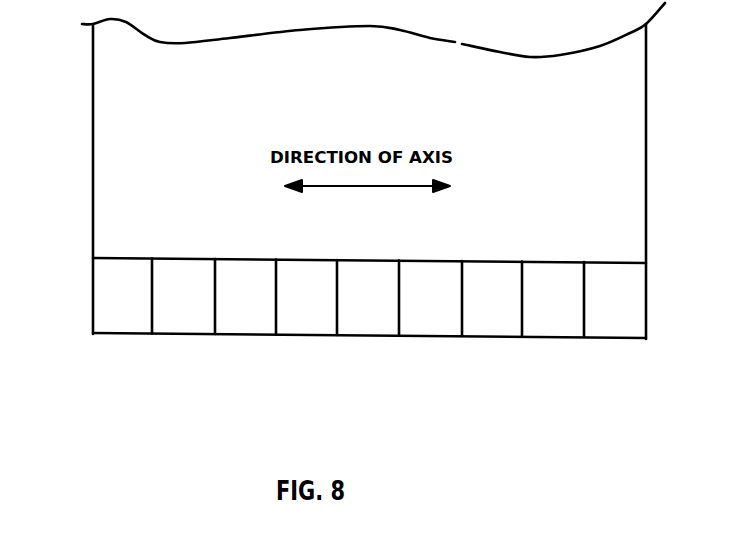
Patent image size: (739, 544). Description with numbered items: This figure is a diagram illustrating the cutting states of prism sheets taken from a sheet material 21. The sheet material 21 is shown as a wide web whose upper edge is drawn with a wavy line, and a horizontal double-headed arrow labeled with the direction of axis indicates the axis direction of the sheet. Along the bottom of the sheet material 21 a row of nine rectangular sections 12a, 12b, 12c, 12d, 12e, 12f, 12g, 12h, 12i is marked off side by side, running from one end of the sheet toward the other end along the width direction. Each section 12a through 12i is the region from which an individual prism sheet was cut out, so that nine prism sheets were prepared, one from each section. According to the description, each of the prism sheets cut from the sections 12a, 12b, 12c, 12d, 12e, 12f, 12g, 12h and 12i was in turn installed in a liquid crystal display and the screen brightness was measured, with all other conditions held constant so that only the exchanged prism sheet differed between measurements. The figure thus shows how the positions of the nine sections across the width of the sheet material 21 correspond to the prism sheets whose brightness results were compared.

The sheet material 21 is at (137, 151).
The section 12a is at (131, 318).
The section 12b is at (192, 318).
The section 12c is at (254, 318).
The section 12d is at (315, 319).
The section 12e is at (377, 319).
The section 12f is at (439, 319).
The section 12g is at (501, 320).
The section 12h is at (562, 320).
The section 12i is at (624, 320).